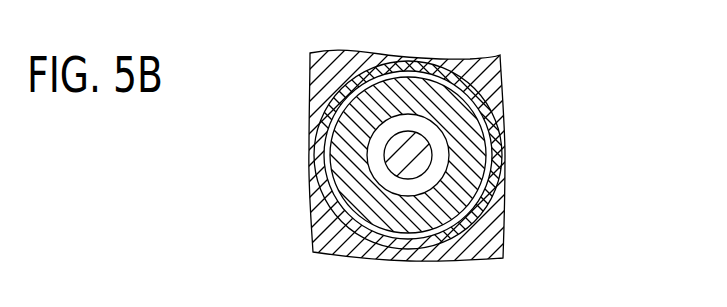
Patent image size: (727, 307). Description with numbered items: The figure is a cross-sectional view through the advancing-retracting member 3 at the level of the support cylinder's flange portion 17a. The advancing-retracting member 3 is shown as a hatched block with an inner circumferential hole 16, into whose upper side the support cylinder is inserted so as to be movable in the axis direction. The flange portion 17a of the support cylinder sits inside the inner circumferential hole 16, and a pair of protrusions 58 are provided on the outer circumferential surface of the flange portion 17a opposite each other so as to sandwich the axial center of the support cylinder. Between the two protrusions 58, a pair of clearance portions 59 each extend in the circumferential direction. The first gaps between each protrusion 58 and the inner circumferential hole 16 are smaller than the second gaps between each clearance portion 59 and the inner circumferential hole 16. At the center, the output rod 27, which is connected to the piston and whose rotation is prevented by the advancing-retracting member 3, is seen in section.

The advancing-retracting member 3 is at (495, 148).
The clearance portion 59 is at (407, 78).
The protrusion 58 is at (325, 160).
The flange portion 17a is at (467, 134).
The inner circumferential hole 16 is at (450, 205).
The output rod 27 is at (408, 165).